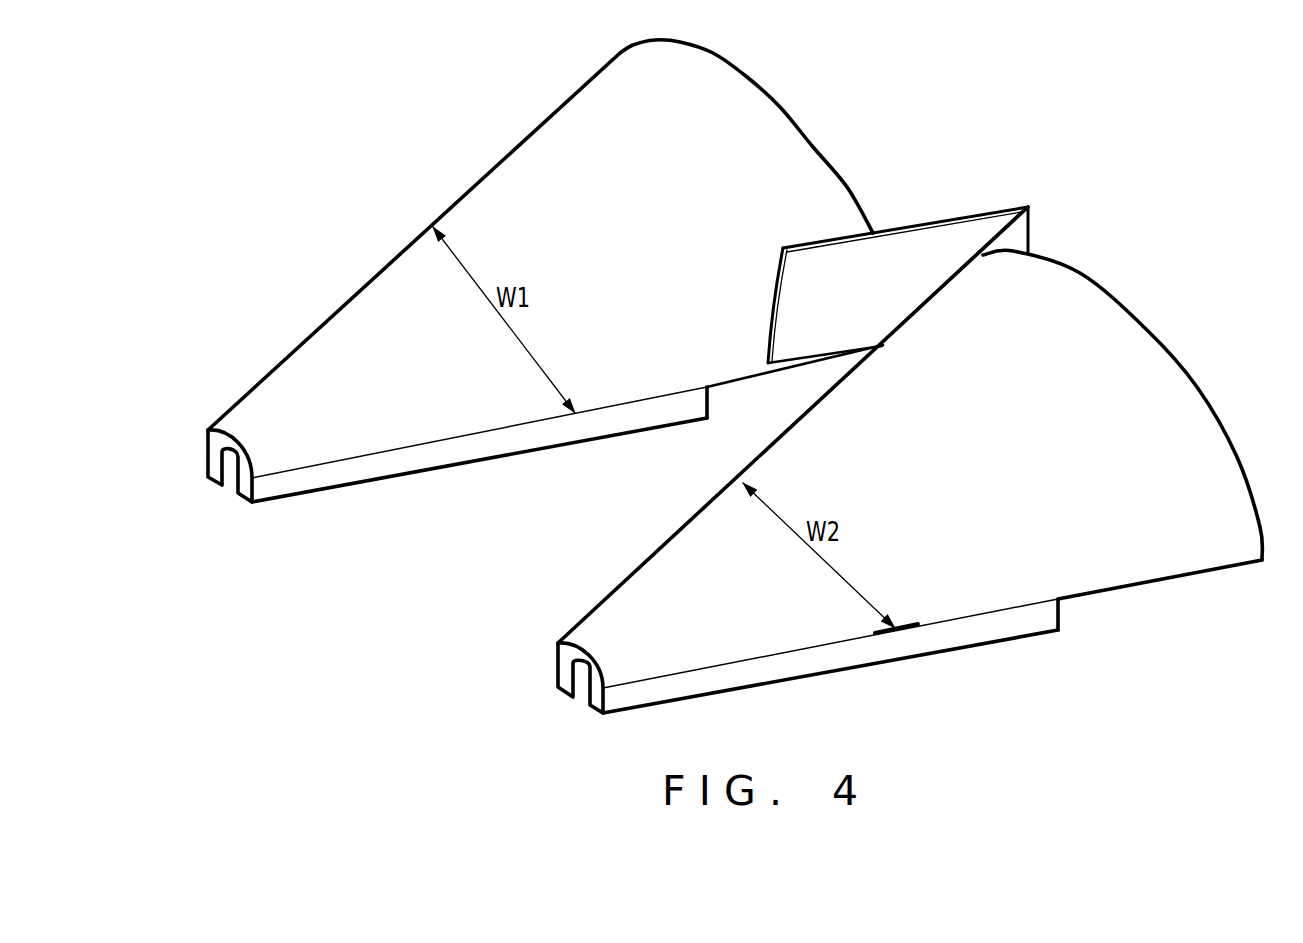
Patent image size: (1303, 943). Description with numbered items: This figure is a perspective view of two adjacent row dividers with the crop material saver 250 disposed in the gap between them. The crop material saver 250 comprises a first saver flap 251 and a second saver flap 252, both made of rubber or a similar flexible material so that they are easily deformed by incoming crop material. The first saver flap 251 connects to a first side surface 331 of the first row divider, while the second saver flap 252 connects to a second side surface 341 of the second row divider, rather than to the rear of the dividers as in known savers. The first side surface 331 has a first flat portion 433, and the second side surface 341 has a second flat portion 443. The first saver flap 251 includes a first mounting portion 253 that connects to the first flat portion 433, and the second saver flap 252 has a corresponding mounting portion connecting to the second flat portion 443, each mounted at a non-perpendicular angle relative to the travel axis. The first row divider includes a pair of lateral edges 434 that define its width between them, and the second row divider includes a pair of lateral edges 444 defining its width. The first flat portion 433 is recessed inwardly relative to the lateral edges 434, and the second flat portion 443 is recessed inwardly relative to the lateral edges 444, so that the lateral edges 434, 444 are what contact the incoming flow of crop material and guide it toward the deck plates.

The crop material saver 250 is at (956, 262).
The first saver flap 251 is at (937, 247).
The second saver flap 252 is at (1020, 242).
The first mounting portion 253 is at (827, 357).
The first side surface 331 is at (617, 363).
The second side surface 341 is at (775, 455).
The first flat portion 433 is at (735, 368).
The lateral edges 434 is at (481, 181).
The second flat portion 443 is at (563, 677).
The lateral edges 444 is at (649, 560).